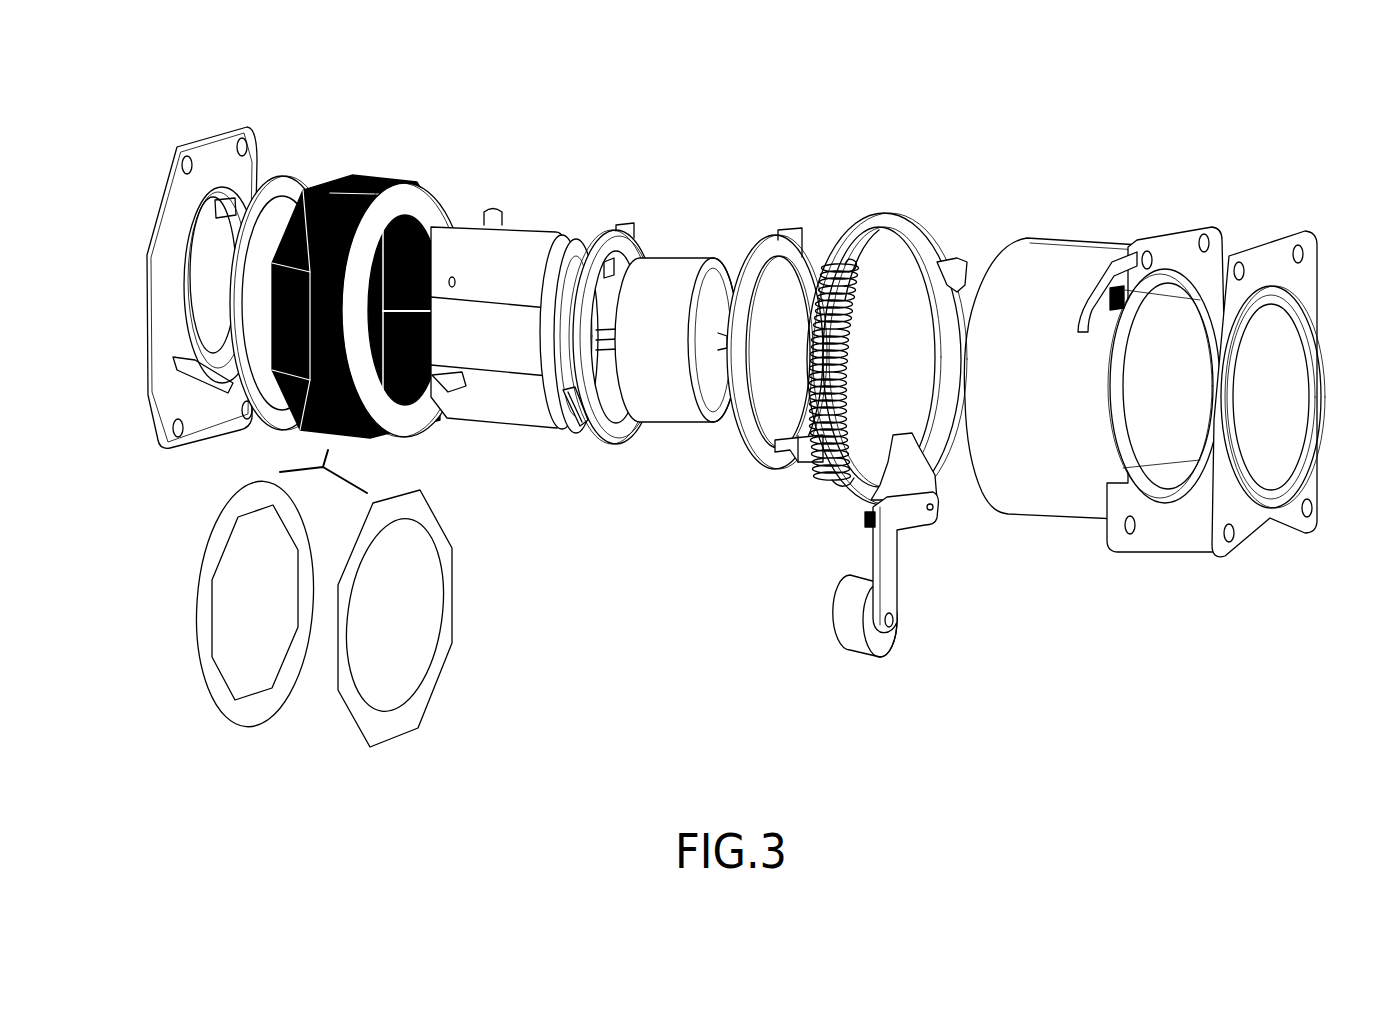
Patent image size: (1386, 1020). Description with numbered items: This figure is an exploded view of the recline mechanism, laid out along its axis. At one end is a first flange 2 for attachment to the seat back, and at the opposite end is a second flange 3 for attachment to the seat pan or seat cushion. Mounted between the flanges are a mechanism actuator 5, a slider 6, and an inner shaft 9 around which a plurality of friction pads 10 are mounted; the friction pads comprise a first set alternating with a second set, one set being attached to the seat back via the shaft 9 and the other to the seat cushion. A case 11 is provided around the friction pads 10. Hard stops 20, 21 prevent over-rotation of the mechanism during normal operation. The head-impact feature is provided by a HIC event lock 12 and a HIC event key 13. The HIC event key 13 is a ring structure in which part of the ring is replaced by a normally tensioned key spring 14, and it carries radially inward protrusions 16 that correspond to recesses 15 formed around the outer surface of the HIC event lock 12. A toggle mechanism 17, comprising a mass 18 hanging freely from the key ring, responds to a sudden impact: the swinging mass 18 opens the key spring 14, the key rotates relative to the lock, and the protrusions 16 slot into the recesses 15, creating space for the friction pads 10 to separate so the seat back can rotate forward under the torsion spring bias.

The first flange 2 is at (1250, 533).
The second flange 3 is at (222, 130).
The mechanism actuator 5 is at (613, 337).
The slider 6 is at (686, 279).
The inner shaft 9 is at (551, 222).
The friction pads 10 is at (373, 174).
The case 11 is at (1096, 396).
The HIC event lock 12 is at (792, 341).
The HIC event key 13 is at (894, 319).
The key spring 14 is at (842, 380).
The recesses 15 is at (770, 489).
The protrusions 16 is at (867, 257).
The toggle mechanism 17 is at (893, 570).
The mass 18 is at (878, 642).
The hard stop 20 is at (582, 423).
The hard stop 21 is at (1145, 483).